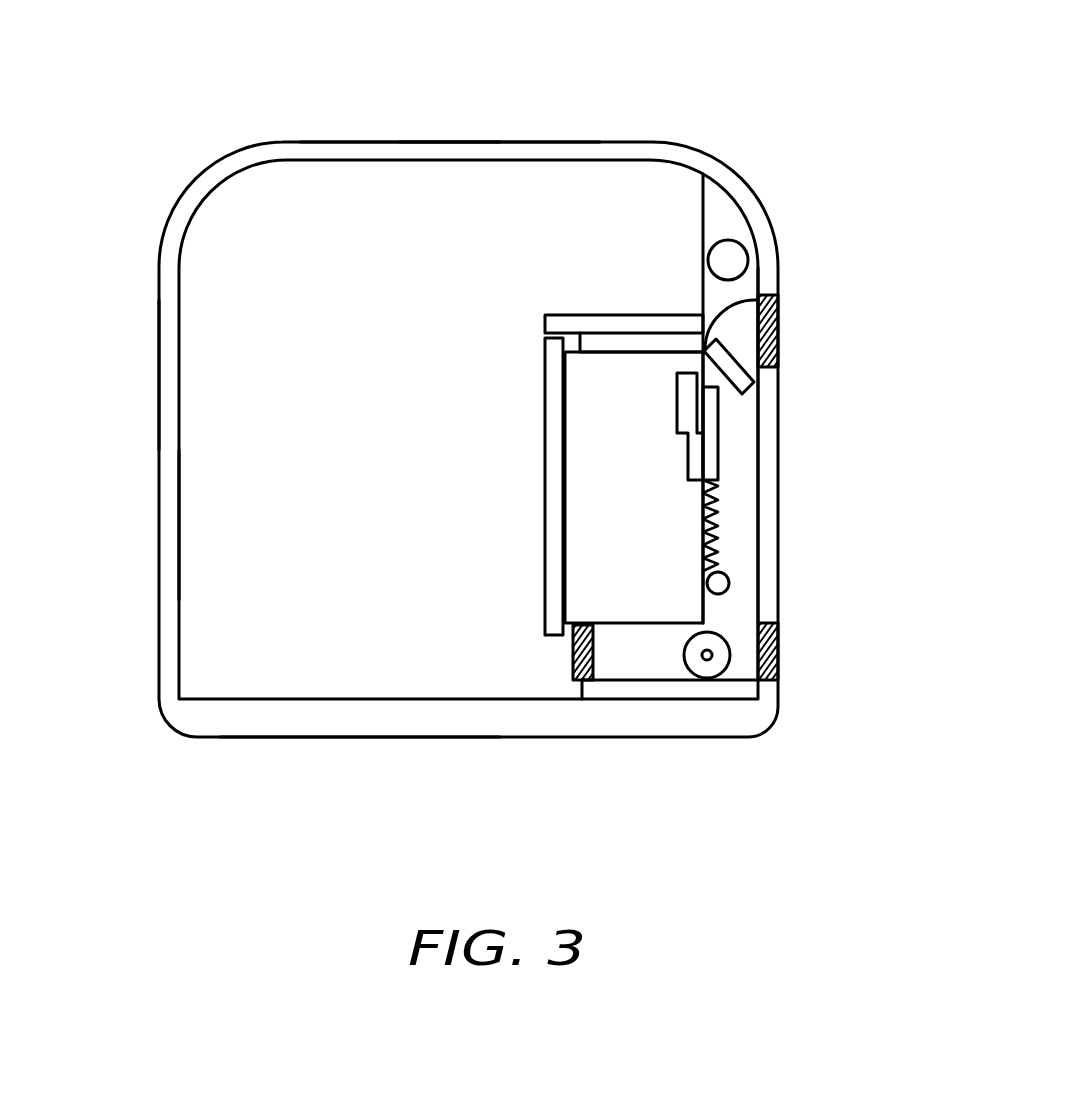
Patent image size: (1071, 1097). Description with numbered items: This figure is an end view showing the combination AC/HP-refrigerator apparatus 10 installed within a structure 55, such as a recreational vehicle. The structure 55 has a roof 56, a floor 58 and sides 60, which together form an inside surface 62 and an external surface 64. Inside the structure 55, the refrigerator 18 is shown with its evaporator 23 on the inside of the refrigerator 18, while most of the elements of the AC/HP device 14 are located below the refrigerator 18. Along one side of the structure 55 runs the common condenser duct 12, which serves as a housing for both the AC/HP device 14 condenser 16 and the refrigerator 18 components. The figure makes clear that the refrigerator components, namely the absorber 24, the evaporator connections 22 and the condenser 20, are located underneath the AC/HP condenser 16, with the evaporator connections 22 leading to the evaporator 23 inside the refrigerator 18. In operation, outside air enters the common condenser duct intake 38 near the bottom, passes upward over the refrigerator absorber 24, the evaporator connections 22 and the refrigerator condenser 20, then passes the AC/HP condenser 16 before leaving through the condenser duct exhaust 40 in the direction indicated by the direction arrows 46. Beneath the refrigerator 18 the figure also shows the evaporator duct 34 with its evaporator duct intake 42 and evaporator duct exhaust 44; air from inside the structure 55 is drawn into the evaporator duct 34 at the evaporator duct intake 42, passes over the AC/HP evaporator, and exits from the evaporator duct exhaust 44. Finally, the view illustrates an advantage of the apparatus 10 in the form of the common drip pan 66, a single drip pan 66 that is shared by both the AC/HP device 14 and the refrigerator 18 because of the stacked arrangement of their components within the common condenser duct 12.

The combination AC/HP-refrigerator apparatus 10 is at (530, 496).
The common condenser duct 12 is at (760, 535).
The AC/HP device 14 is at (702, 670).
The condenser 16 is at (745, 362).
The refrigerator 18 is at (593, 453).
The condenser 20 is at (720, 430).
The evaporator connections 22 is at (720, 468).
The evaporator 23 is at (677, 408).
The absorber 24 is at (723, 580).
The evaporator duct 34 is at (635, 685).
The common condenser duct intake 38 is at (778, 670).
The condenser duct exhaust 40 is at (778, 311).
The evaporator duct intake 42 is at (573, 663).
The evaporator duct exhaust 44 is at (728, 255).
The direction arrows 46 is at (728, 340).
The structure 55 is at (648, 74).
The roof 56 is at (343, 142).
The floor 58 is at (313, 712).
The sides 60 is at (159, 490).
The inside surface 62 is at (180, 573).
The external surface 64 is at (167, 388).
The common drip pan 66 is at (580, 690).